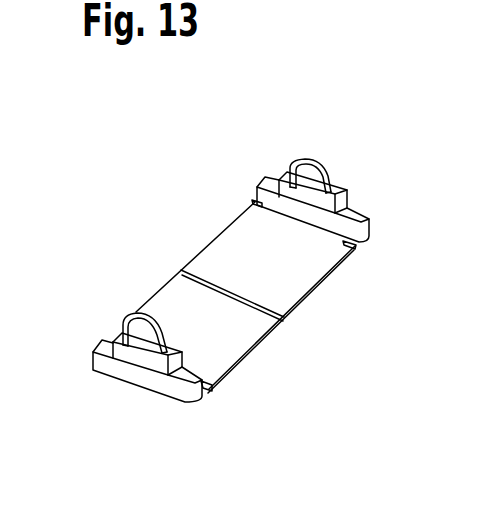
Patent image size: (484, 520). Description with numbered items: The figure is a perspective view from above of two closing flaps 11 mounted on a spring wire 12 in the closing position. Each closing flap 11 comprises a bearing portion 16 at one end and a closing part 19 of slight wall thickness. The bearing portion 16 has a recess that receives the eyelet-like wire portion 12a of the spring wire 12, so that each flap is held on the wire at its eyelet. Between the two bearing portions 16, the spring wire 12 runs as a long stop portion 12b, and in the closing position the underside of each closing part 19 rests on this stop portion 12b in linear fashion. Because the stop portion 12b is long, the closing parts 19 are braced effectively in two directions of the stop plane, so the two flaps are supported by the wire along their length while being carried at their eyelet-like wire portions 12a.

The closing flap 11 is at (196, 238).
The spring wire 12 is at (276, 354).
The eyelet-like wire portion 12a is at (290, 166).
The stop portion 12b is at (304, 322).
The bearing portion 16 is at (354, 217).
The closing part 19 is at (306, 281).